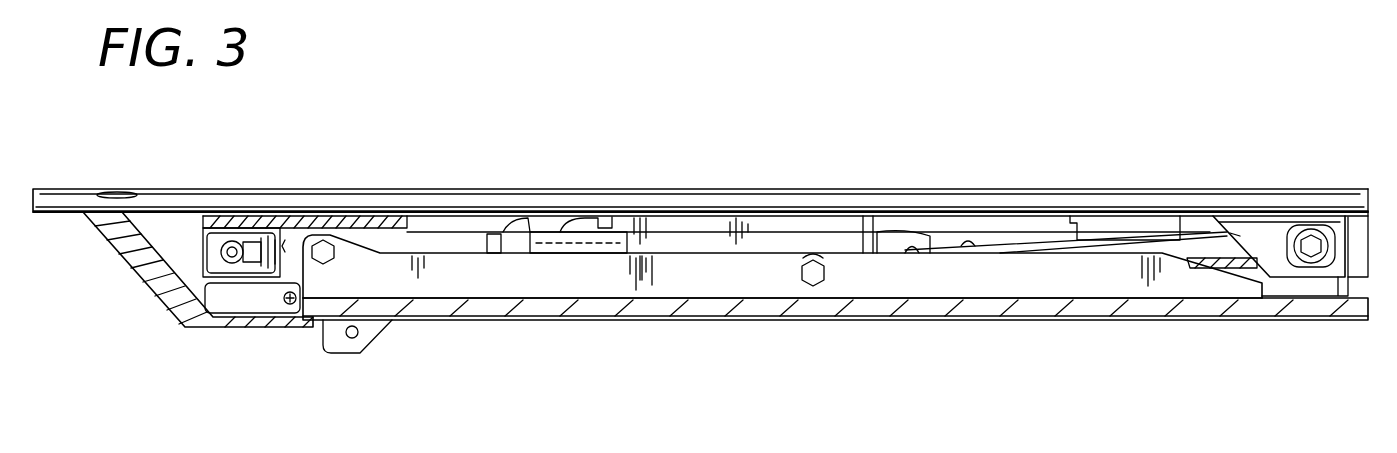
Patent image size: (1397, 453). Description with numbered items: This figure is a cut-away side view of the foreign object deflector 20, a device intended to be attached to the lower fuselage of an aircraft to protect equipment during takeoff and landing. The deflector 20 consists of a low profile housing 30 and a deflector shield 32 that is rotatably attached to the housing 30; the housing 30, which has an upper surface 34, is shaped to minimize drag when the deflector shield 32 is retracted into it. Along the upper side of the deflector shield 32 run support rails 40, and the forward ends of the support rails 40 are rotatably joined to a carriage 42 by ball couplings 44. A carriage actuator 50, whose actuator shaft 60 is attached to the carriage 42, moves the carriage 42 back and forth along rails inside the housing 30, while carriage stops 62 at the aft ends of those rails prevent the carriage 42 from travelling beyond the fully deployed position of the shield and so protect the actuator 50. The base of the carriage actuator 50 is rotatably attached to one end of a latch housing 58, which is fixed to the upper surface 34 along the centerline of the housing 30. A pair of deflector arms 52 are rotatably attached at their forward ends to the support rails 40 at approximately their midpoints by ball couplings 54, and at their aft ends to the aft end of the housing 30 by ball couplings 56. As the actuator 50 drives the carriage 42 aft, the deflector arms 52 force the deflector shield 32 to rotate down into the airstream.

The foreign object deflector 20 is at (796, 156).
The low profile housing 30 is at (91, 191).
The deflector shield 32 is at (673, 321).
The upper surface 34 is at (868, 197).
The support rails 40 is at (530, 280).
The carriage 42 is at (285, 245).
The ball couplings 44 is at (326, 240).
The carriage actuator 50 is at (718, 232).
The deflector arms 52 is at (1183, 235).
The ball couplings 54 is at (165, 306).
The ball couplings 56 is at (1310, 256).
The latch housing 58 is at (1013, 225).
The actuator shaft 60 is at (588, 232).
The carriage stops 62 is at (497, 217).